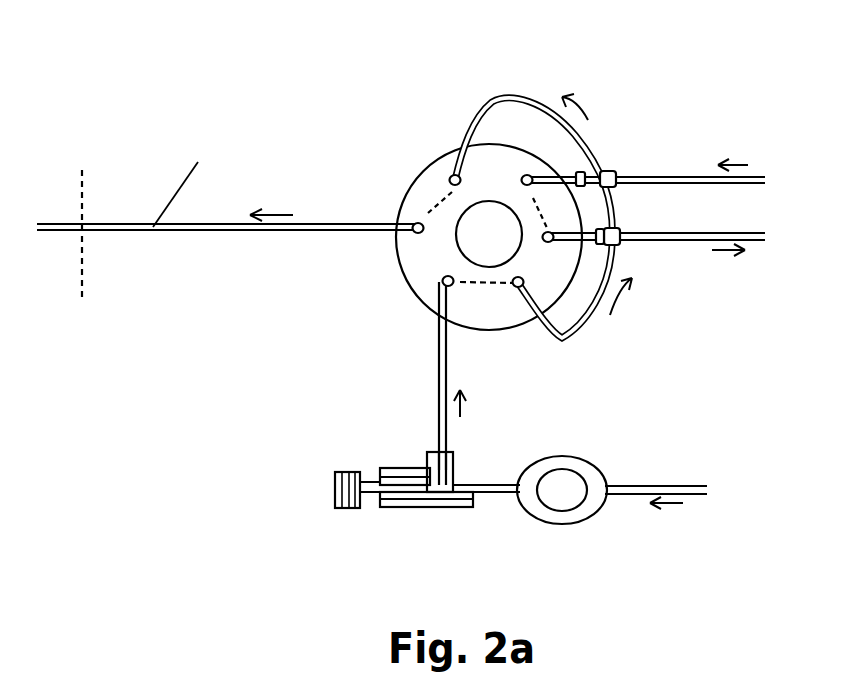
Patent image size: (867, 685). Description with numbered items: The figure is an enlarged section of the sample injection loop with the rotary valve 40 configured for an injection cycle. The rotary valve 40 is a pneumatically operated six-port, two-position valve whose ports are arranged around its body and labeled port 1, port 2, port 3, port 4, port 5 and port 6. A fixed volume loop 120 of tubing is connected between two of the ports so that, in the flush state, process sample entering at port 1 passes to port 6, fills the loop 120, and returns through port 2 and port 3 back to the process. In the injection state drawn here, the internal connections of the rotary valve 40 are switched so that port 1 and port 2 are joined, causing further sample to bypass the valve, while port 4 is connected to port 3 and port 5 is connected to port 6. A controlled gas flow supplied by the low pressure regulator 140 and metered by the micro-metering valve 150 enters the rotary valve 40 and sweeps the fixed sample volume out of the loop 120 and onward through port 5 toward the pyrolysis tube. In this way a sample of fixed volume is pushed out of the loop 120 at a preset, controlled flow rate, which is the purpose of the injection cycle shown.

The rotary valve 40 is at (395, 265).
The fixed volume loop 120 is at (498, 98).
The low pressure regulator 140 is at (583, 523).
The micro-metering valve 150 is at (427, 515).
The port 1 is at (518, 171).
The port 2 is at (547, 251).
The port 3 is at (521, 269).
The port 4 is at (447, 267).
The port 5 is at (427, 231).
The port 6 is at (464, 183).